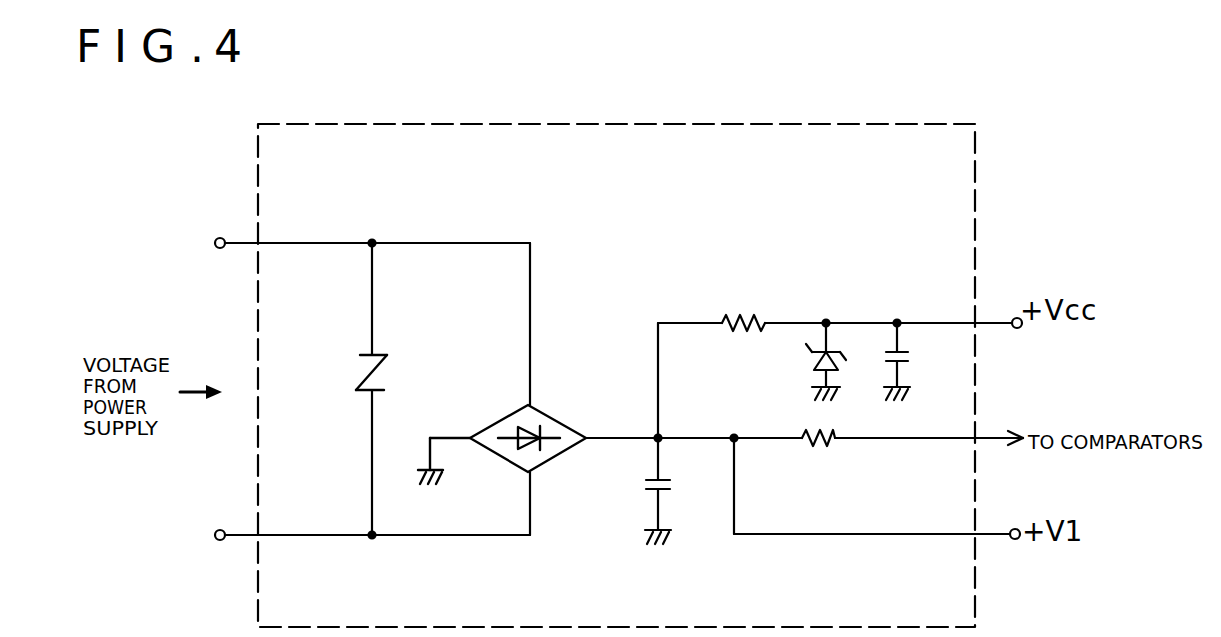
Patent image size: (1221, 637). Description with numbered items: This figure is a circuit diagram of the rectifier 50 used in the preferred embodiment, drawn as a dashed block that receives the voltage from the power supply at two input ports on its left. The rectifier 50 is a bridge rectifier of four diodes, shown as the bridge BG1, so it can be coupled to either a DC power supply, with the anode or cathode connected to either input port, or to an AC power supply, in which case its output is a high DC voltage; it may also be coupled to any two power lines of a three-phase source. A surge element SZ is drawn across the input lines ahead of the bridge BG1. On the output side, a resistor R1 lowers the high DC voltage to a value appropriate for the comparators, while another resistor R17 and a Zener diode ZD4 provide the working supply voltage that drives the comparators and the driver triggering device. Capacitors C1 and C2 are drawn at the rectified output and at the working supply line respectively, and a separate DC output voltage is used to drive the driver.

The rectifier 50 is at (921, 124).
The surge absorber SZ is at (395, 374).
The bridge rectifier BG1 is at (514, 426).
The resistor R17 is at (744, 305).
The resistor R1 is at (821, 457).
The Zener diode ZD4 is at (798, 361).
The capacitor C1 is at (678, 491).
The capacitor C2 is at (916, 361).